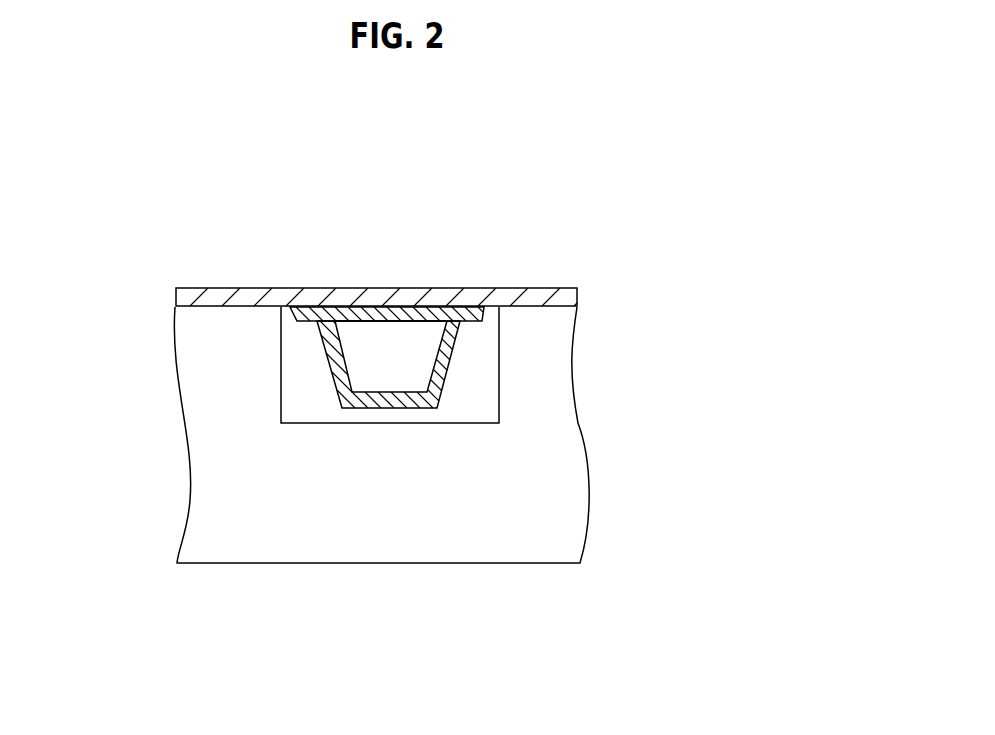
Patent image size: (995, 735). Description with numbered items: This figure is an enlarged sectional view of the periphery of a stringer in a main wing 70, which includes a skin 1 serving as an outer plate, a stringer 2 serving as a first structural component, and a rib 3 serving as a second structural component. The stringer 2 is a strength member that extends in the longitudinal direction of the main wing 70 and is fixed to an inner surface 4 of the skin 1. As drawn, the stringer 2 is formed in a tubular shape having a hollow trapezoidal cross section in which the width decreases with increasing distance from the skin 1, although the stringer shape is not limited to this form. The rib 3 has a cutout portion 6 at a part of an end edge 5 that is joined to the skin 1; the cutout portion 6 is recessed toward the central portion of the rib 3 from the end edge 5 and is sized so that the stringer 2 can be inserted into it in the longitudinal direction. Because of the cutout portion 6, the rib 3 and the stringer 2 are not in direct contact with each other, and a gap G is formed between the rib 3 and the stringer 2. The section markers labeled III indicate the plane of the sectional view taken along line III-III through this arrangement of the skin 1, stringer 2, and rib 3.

The main wing 70 is at (652, 200).
The skin 1 is at (455, 287).
The stringer 2 is at (325, 357).
The rib 3 is at (553, 363).
The inner surface 4 is at (197, 308).
The end edge 5 is at (538, 305).
The cutout portion 6 is at (510, 381).
The gap G is at (457, 405).
The line III- III is at (290, 260).